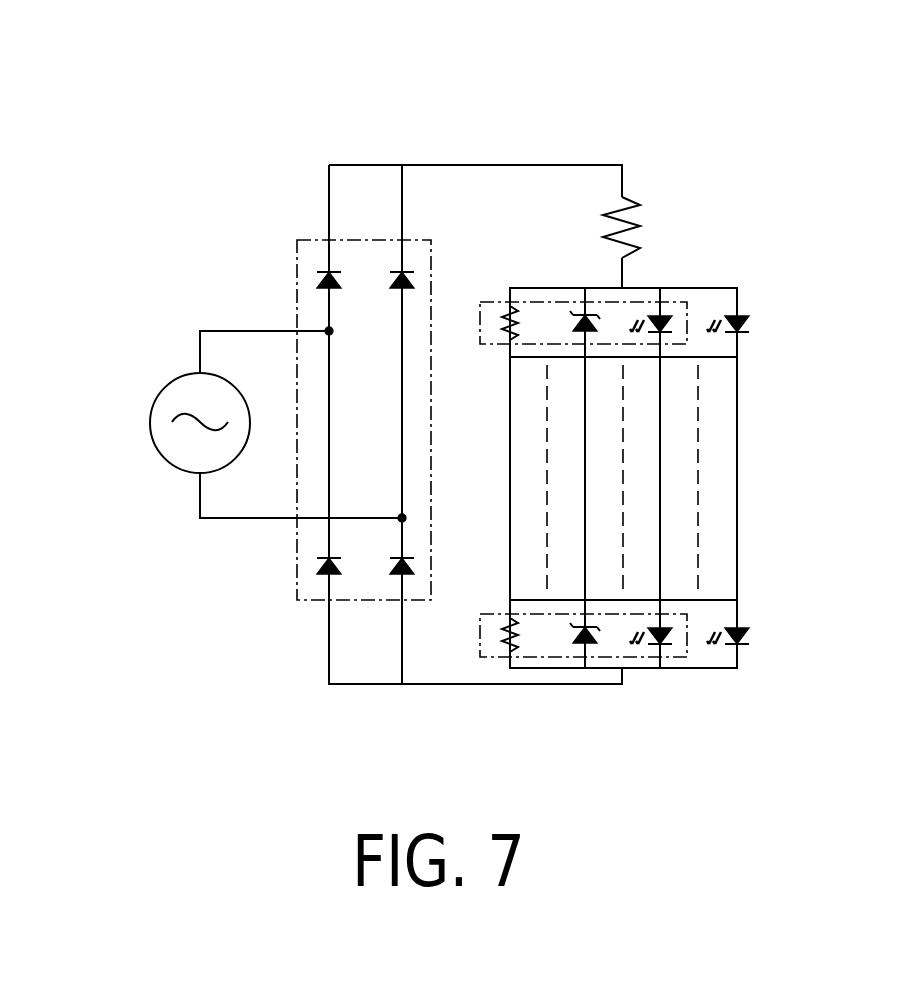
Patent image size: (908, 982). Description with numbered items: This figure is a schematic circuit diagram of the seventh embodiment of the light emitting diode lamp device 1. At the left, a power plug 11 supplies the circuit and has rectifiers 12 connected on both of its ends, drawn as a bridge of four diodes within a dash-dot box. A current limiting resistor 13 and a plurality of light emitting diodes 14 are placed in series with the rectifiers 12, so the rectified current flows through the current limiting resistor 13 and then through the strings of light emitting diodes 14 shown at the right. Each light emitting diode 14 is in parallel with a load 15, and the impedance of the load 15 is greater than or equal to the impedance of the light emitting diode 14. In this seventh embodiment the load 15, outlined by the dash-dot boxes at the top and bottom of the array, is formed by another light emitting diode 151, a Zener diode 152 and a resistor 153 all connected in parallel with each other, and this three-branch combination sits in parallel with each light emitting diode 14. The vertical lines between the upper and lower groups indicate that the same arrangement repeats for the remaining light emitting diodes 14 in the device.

The light emitting diode lamp device 1 is at (412, 137).
The power plug 11 is at (162, 445).
The rectifiers 12 is at (303, 238).
The current limiting resistor 13 is at (630, 207).
The light emitting diode 14 is at (752, 322).
The load 15 is at (651, 364).
The another light emitting diode 151 is at (663, 317).
The Zener diode 152 is at (588, 316).
The resistor 153 is at (513, 310).